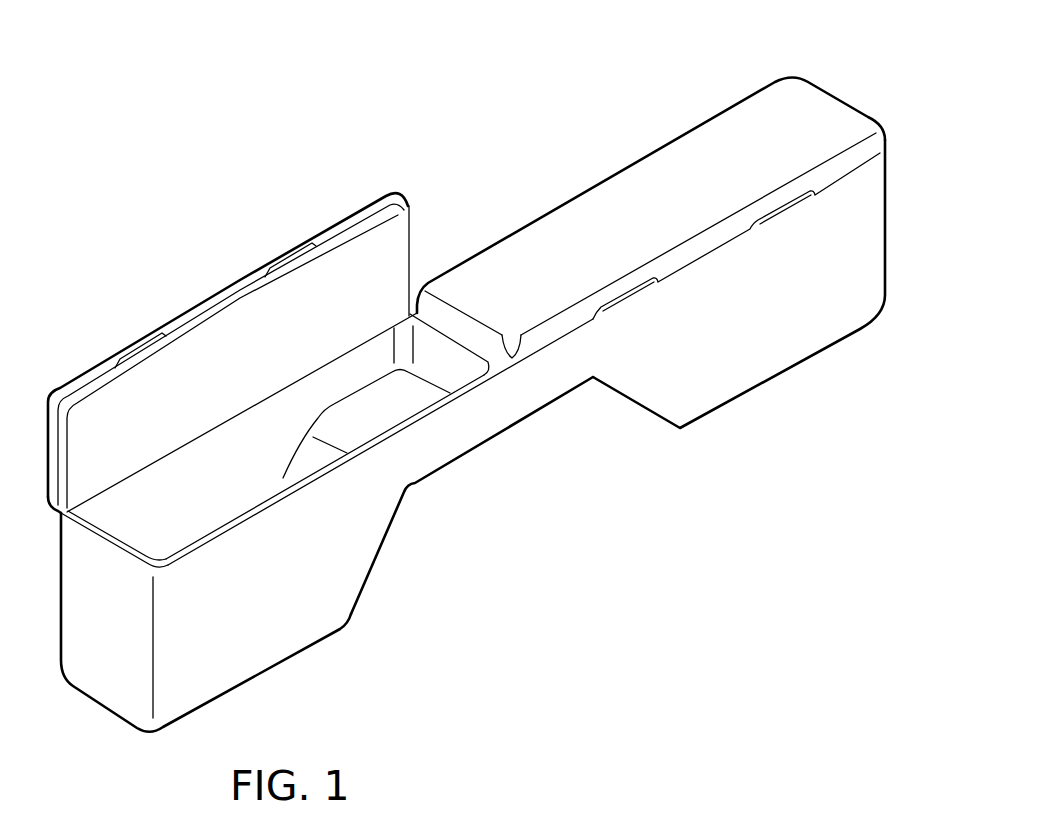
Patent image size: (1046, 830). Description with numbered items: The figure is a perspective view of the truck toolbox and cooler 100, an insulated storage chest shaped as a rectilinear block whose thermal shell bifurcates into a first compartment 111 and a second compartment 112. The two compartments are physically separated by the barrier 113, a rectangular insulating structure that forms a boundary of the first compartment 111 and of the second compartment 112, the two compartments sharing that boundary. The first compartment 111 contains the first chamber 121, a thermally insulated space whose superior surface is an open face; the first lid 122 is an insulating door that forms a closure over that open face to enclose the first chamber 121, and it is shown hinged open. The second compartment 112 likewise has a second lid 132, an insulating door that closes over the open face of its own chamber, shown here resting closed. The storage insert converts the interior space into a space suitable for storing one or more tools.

The truck toolbox and cooler 100 is at (126, 198).
The first compartment 111 is at (250, 640).
The second compartment 112 is at (707, 385).
The barrier 113 is at (435, 357).
The first chamber 121 is at (232, 485).
The first lid 122 is at (212, 367).
The second lid 132 is at (708, 158).